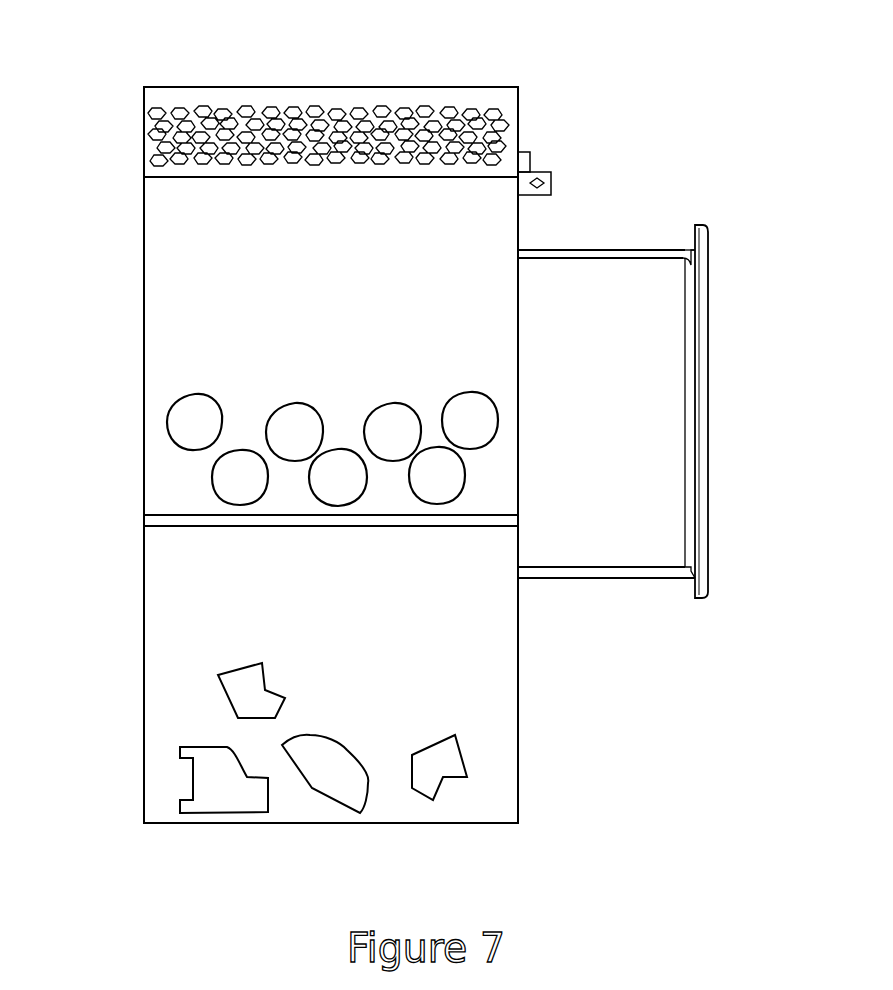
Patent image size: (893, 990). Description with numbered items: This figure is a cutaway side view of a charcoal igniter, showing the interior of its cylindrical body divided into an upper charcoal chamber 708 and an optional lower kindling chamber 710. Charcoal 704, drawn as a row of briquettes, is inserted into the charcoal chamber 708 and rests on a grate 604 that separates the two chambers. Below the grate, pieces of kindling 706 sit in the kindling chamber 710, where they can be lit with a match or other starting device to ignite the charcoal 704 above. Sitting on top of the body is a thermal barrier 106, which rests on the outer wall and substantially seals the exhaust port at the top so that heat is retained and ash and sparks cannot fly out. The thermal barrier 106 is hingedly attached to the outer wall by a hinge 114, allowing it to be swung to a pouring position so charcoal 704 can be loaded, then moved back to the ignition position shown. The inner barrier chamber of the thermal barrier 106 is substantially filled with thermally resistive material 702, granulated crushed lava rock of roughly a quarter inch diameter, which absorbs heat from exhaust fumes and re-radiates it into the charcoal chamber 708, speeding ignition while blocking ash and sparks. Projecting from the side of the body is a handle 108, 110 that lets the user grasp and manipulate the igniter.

The thermal barrier 106 is at (416, 100).
The thermally resistive material 702 is at (235, 108).
The charcoal 704 is at (234, 460).
The kindling 706 is at (443, 745).
The charcoal chamber 708 is at (165, 305).
The lower kindling chamber 710 is at (170, 702).
The grate 604 is at (202, 515).
The hinge 114 is at (553, 178).
The handle 110 is at (582, 252).
The handle 108 is at (700, 362).